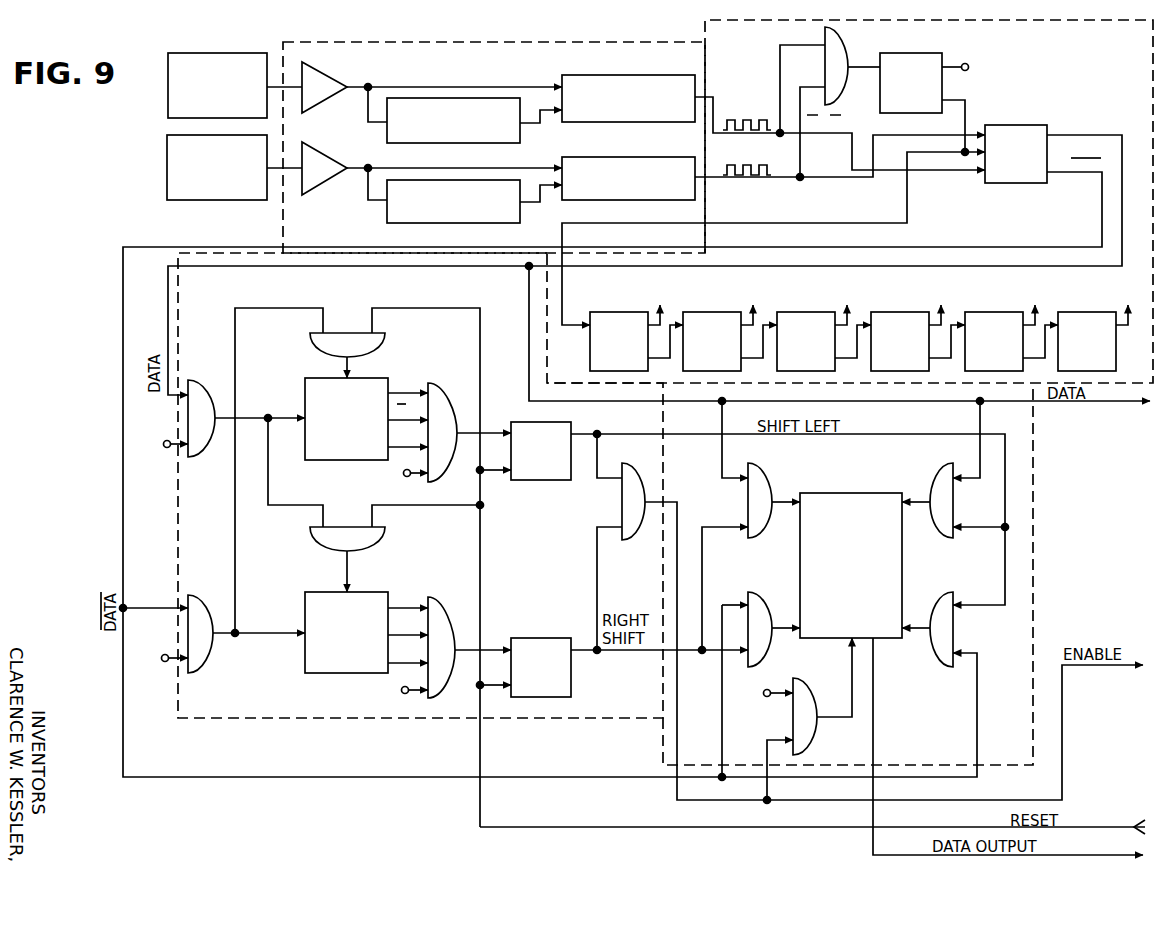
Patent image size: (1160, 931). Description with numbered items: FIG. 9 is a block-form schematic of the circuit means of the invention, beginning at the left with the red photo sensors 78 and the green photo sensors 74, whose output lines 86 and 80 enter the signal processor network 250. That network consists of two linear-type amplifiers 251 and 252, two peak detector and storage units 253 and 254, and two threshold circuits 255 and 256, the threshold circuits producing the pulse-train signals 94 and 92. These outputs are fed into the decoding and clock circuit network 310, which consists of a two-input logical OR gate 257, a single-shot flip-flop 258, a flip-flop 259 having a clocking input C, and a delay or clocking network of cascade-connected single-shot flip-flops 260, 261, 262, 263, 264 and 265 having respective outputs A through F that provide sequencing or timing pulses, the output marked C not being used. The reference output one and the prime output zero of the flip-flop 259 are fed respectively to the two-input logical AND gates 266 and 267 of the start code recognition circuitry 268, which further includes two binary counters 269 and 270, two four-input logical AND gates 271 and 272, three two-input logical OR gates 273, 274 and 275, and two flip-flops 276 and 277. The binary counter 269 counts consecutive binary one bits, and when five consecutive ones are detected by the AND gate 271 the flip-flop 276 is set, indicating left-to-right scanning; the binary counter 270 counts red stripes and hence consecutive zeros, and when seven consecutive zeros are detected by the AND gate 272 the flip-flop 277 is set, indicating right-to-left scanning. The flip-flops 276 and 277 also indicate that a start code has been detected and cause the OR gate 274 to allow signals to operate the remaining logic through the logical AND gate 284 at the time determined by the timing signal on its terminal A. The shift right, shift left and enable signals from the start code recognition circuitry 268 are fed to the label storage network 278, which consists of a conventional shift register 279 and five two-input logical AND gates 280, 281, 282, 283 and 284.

The green photo sensors 74 is at (170, 135).
The red photo sensors 78 is at (184, 52).
The green sensor output line 80 is at (270, 170).
The red sensor output line 86 is at (270, 82).
The green threshold output signal 92 is at (735, 186).
The red threshold output signal 94 is at (735, 140).
The signal processor network 250 is at (464, 49).
The linear-type amplifier 251 is at (322, 52).
The linear-type amplifier 252 is at (318, 128).
The peak detector and storage unit 253 is at (387, 140).
The peak detector and storage unit 254 is at (387, 212).
The threshold circuit 255 is at (599, 75).
The threshold circuit 256 is at (586, 156).
The two-input logical OR gate 257 is at (843, 80).
The single-shot flip-flop 258 is at (924, 54).
The flip-flop 259 is at (1011, 125).
The single-shot flip-flop 260 is at (614, 312).
The single-shot flip-flop 261 is at (708, 312).
The single-shot flip-flop 262 is at (807, 312).
The single-shot flip-flop 263 is at (900, 312).
The single-shot flip-flop 264 is at (993, 312).
The single-shot flip-flop 265 is at (1085, 312).
The two-input logical AND gate 266 is at (220, 365).
The two-input logical AND gate 267 is at (216, 575).
The start code recognition circuitry 268 is at (320, 723).
The binary counter 269 is at (326, 377).
The binary counter 270 is at (364, 589).
The four-input logical AND gate 271 is at (441, 396).
The four-input logical AND gate 272 is at (434, 601).
The two-input logical OR gate 273 is at (318, 344).
The two-input logical OR gate 274 is at (644, 452).
The two-input logical OR gate 275 is at (317, 550).
The flip-flop 276 is at (560, 421).
The flip-flop 277 is at (525, 636).
The label storage network 278 is at (1031, 673).
The shift register 279 is at (848, 493).
The two-input logical AND gate 280 is at (756, 470).
The two-input logical AND gate 281 is at (752, 595).
The two-input logical AND gate 282 is at (944, 470).
The two-input logical AND gate 283 is at (946, 595).
The two-input logical AND gate 284 is at (799, 680).
The decoding and clock circuit network 310 is at (1148, 78).